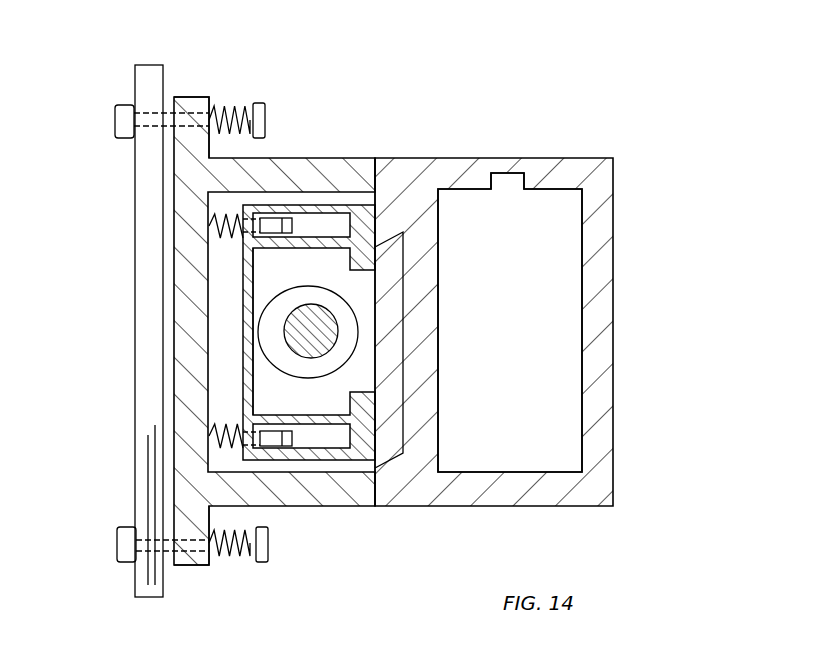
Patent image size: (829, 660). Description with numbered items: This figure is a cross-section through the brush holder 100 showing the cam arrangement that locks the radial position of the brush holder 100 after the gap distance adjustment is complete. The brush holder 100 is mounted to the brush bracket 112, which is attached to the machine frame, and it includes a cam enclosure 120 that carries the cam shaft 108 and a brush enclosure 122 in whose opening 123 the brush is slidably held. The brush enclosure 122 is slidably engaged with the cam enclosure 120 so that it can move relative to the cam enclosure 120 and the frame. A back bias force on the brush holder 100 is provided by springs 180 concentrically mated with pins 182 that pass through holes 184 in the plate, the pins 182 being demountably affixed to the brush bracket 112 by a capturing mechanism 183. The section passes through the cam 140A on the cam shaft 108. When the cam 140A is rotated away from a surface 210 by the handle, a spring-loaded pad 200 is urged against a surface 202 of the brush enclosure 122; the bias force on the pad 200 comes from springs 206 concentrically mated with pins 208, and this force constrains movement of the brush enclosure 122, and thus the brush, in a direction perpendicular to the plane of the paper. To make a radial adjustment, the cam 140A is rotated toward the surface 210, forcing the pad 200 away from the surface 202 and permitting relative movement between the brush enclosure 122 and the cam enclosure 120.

The brush holder 100 is at (644, 151).
The cam shaft 108 is at (330, 352).
The brush bracket 112 is at (136, 486).
The cam enclosure 120 is at (318, 505).
The brush enclosure 122 is at (613, 325).
The opening 123 is at (500, 458).
The cam 140A is at (360, 318).
The springs 180 is at (214, 110).
The pins 182 is at (266, 117).
The capturing mechanism 183 is at (125, 103).
The holes 184 is at (186, 97).
The spring-loaded pad 200 is at (243, 318).
The surface 202 is at (378, 205).
The springs 206 is at (215, 222).
The pins 208 is at (272, 222).
The surface 210 is at (258, 276).